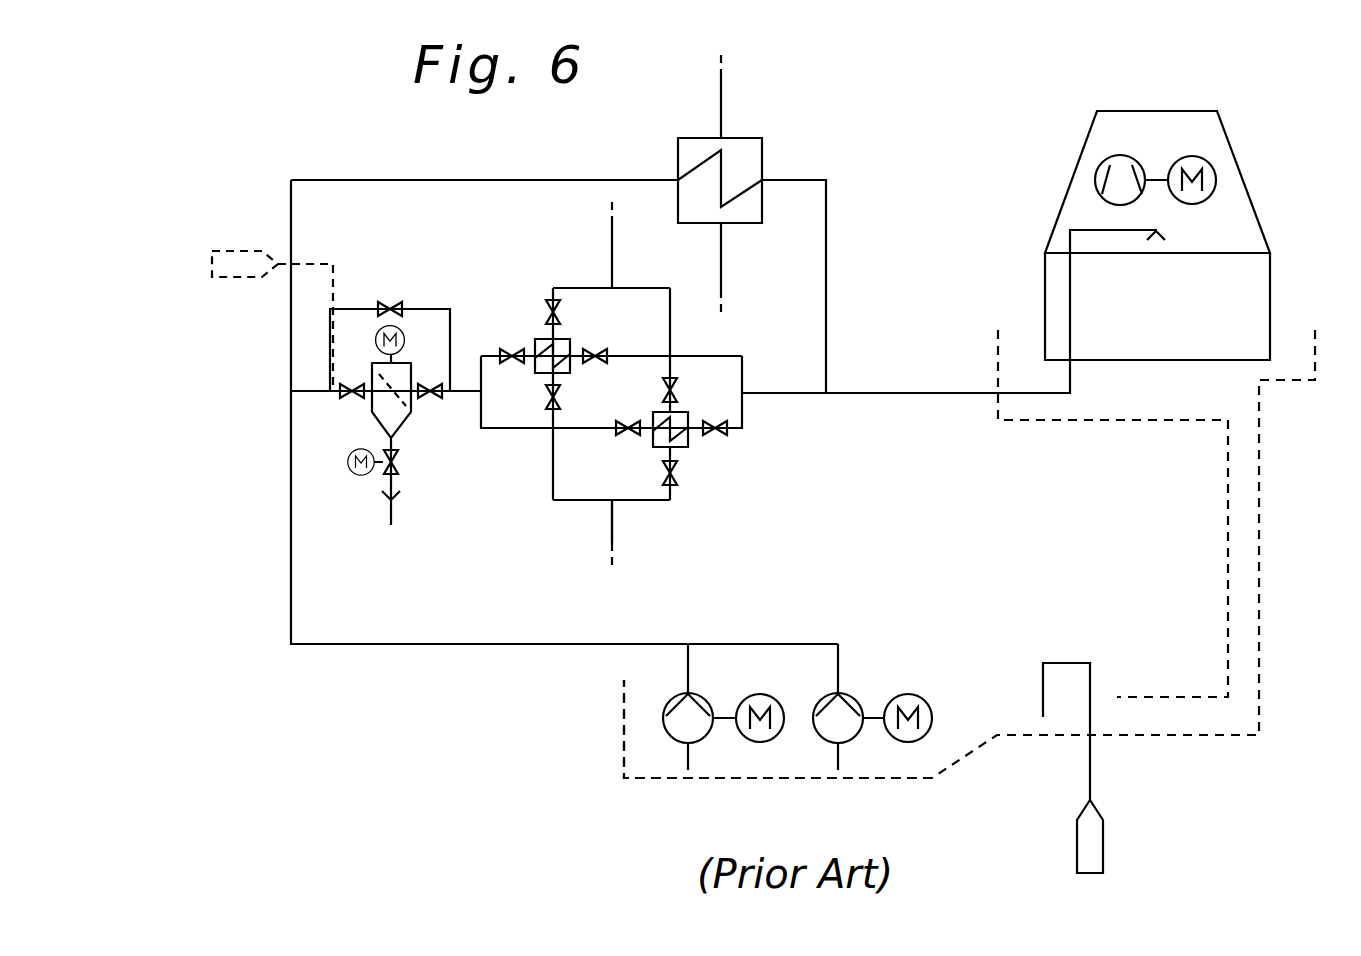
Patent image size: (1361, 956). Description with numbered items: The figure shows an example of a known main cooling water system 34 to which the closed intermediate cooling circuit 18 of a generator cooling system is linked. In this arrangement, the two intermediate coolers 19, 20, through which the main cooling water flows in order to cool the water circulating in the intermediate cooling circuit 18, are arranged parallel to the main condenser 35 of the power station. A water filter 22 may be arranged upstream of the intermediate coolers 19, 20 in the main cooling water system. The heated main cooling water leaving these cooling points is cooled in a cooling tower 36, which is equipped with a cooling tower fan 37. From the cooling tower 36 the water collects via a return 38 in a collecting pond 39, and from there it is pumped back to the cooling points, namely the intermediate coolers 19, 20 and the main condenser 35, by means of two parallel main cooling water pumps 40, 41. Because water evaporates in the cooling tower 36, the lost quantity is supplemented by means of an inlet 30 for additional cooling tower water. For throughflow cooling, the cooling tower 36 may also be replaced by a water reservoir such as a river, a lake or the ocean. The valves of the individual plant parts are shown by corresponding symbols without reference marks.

The closed intermediate cooling circuit 18 is at (612, 523).
The intermediate cooler 19 is at (540, 345).
The intermediate cooler 20 is at (680, 448).
The water filter 22 is at (402, 417).
The inlet for additional cooling tower water 30 is at (1092, 852).
The main cooling water system 34 is at (947, 568).
The main condenser 35 is at (750, 158).
The cooling tower 36 is at (1238, 223).
The cooling tower fan 37 is at (1113, 175).
The return 38 is at (1240, 568).
The collecting pond 39 is at (892, 766).
The main cooling water pump 40 is at (675, 723).
The main cooling water pump 41 is at (832, 713).